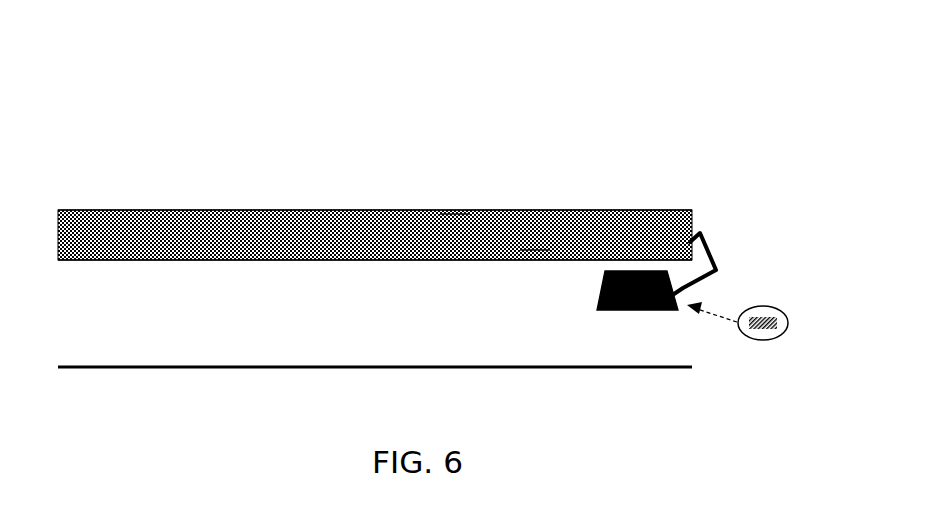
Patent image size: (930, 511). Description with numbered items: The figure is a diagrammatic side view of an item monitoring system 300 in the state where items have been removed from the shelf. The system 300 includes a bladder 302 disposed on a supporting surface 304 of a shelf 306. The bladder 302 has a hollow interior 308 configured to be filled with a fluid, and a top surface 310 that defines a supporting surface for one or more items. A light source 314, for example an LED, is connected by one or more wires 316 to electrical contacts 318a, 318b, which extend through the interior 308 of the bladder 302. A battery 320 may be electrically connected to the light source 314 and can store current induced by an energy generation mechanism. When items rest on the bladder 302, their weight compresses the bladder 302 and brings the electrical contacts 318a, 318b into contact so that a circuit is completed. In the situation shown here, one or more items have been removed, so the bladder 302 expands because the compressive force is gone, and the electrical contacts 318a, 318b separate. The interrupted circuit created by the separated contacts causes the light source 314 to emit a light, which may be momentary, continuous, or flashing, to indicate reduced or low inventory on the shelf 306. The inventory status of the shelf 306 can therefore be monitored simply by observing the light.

The item monitoring system 300 is at (531, 72).
The bladder 302 is at (375, 286).
The supporting surface 304 is at (108, 261).
The shelf 306 is at (259, 380).
The hollow interior 308 is at (173, 236).
The top surface 310 is at (129, 209).
The light source 314 is at (640, 270).
The wires 316 is at (709, 243).
The electrical contact 318a is at (455, 215).
The electrical contact 318b is at (535, 250).
The battery 320 is at (763, 305).